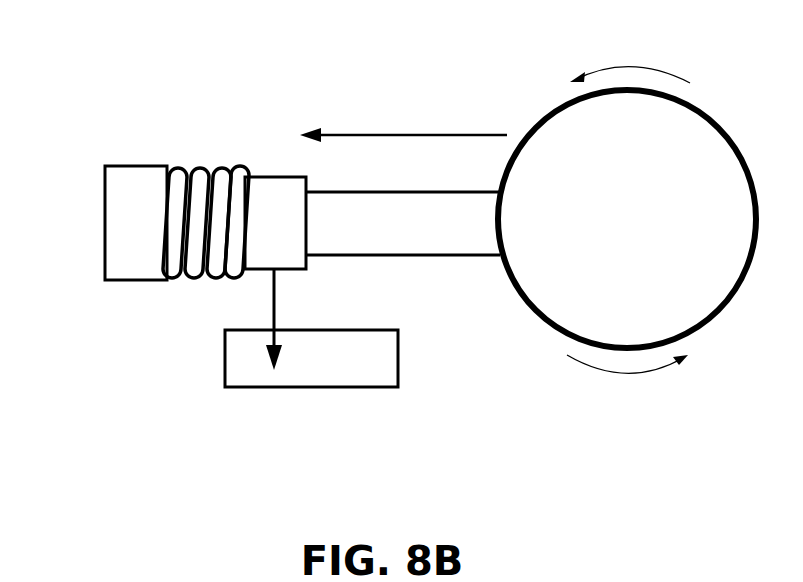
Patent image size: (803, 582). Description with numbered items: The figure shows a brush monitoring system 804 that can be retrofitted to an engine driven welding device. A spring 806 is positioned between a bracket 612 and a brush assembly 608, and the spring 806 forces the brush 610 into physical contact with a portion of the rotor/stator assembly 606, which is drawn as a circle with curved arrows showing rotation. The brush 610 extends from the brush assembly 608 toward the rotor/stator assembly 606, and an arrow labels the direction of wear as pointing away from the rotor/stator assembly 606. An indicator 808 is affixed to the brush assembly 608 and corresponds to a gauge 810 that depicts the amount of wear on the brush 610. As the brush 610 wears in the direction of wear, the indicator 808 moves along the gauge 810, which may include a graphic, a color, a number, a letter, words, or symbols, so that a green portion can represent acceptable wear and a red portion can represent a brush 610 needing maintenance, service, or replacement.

The brush monitoring system 804 is at (128, 62).
The bracket 612 is at (128, 166).
The brush assembly 608 is at (260, 177).
The spring 806 is at (237, 285).
The brush 610 is at (412, 192).
The indicator 808 is at (275, 320).
The gauge 810 is at (398, 367).
The rotor/stator assembly 606 is at (627, 220).